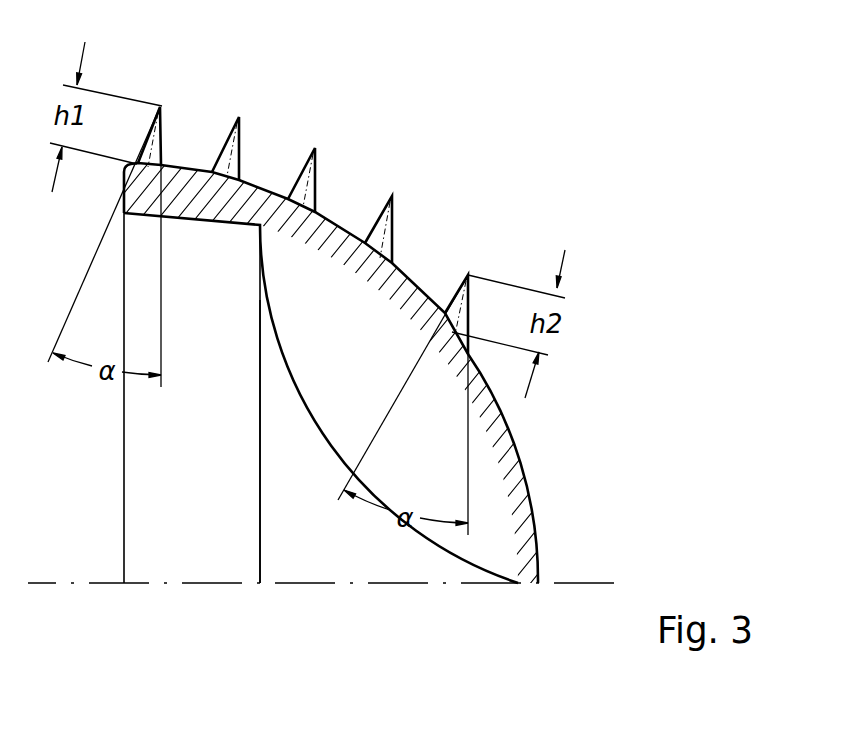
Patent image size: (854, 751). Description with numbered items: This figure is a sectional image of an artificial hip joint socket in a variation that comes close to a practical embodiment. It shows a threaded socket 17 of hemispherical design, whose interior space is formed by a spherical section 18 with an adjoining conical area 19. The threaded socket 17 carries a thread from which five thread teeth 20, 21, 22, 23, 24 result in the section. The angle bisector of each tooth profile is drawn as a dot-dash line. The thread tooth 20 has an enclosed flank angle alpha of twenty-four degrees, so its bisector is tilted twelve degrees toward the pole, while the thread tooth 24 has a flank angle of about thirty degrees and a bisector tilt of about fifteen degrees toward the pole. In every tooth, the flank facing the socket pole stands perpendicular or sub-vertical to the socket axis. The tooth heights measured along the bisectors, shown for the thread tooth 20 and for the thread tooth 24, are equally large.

The threaded socket 17 is at (512, 472).
The spherical section 18 is at (303, 441).
The conical area 19 is at (192, 398).
The thread tooth 20 is at (160, 107).
The thread tooth 21 is at (239, 117).
The thread tooth 22 is at (315, 148).
The thread tooth 23 is at (392, 196).
The thread tooth 24 is at (468, 275).